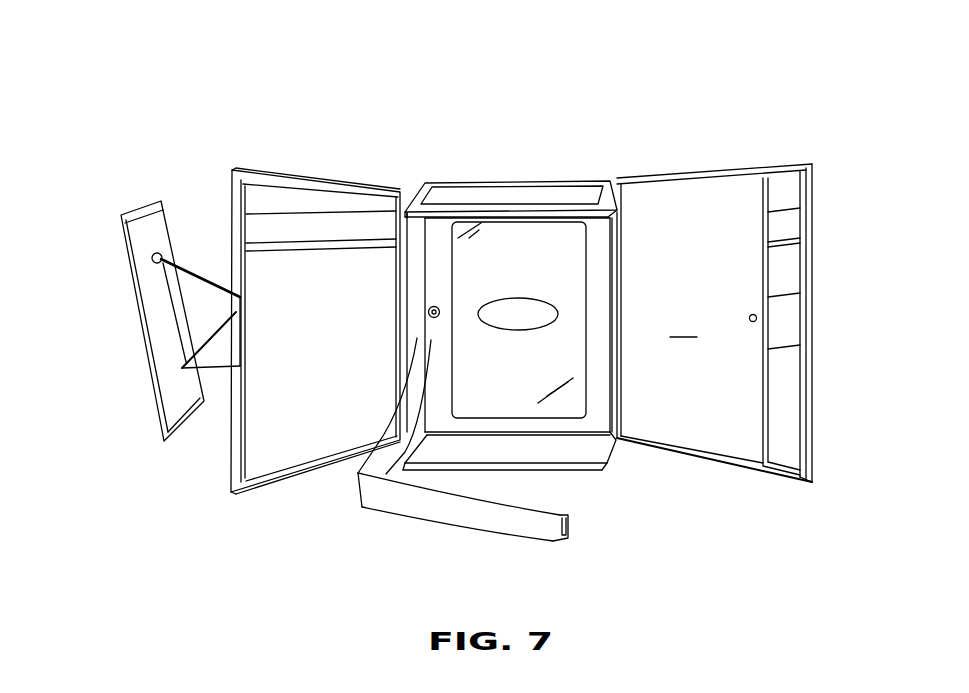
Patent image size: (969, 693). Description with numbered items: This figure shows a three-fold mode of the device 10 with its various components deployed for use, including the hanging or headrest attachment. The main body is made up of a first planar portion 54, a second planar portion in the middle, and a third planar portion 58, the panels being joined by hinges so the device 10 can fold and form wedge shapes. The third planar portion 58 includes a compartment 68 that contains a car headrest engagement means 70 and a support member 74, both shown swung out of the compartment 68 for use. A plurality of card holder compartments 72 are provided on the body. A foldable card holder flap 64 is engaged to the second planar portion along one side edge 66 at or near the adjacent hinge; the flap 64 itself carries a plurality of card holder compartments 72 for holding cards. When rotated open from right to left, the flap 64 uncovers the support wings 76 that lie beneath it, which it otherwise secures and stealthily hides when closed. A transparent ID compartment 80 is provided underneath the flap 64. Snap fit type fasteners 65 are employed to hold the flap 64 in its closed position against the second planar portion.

The device 10 is at (178, 97).
The first planar portion 54 is at (782, 169).
The third planar portion 58 is at (285, 166).
The foldable card holder flap 64 is at (692, 323).
The snap fit type fasteners 65 is at (436, 306).
The side edge 66 is at (625, 340).
The compartment 68 is at (238, 463).
The car headrest engagement means 70 is at (132, 282).
The card holder compartments 72 is at (338, 249).
The support member 74 is at (405, 512).
The support wings 76 is at (415, 190).
The transparent ID compartment 80 is at (528, 268).